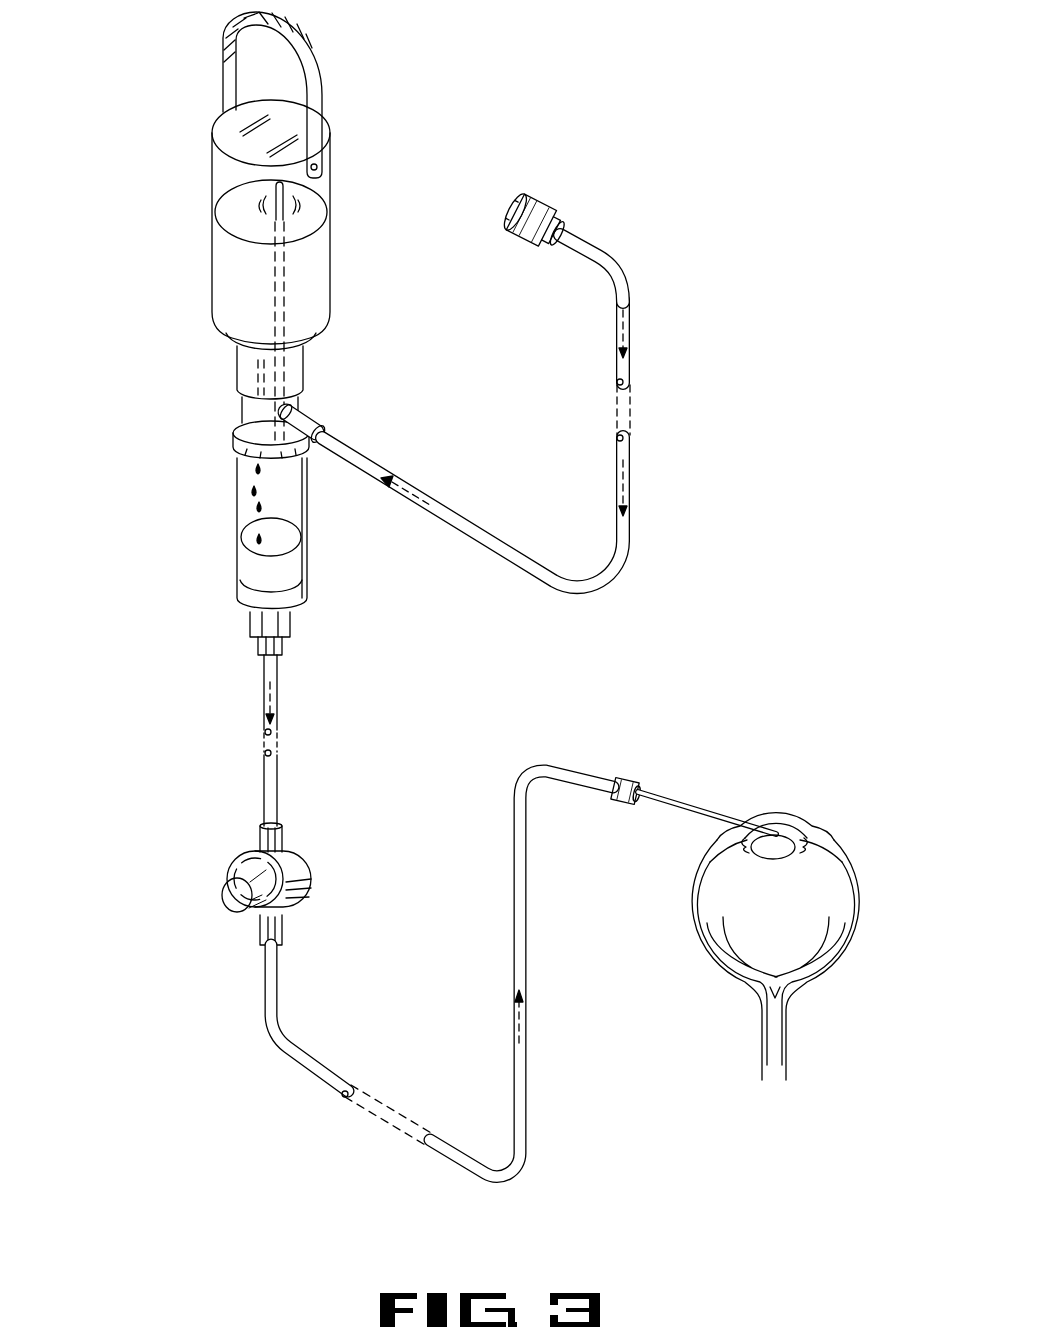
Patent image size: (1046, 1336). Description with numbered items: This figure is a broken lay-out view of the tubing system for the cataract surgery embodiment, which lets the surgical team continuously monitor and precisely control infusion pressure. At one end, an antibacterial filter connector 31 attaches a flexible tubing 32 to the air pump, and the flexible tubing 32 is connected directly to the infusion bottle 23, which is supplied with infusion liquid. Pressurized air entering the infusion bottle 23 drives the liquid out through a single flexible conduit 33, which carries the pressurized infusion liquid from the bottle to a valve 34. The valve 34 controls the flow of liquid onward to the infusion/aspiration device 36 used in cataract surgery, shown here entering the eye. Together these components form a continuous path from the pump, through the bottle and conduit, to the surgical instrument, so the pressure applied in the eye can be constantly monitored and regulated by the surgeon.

The infusion bottle 23 is at (243, 502).
The antibacterial filter connector 31 is at (518, 200).
The flexible tubing 32 is at (455, 517).
The flexible conduit 33 is at (280, 712).
The valve 34 is at (294, 858).
The infusion/aspiration device 36 is at (679, 805).